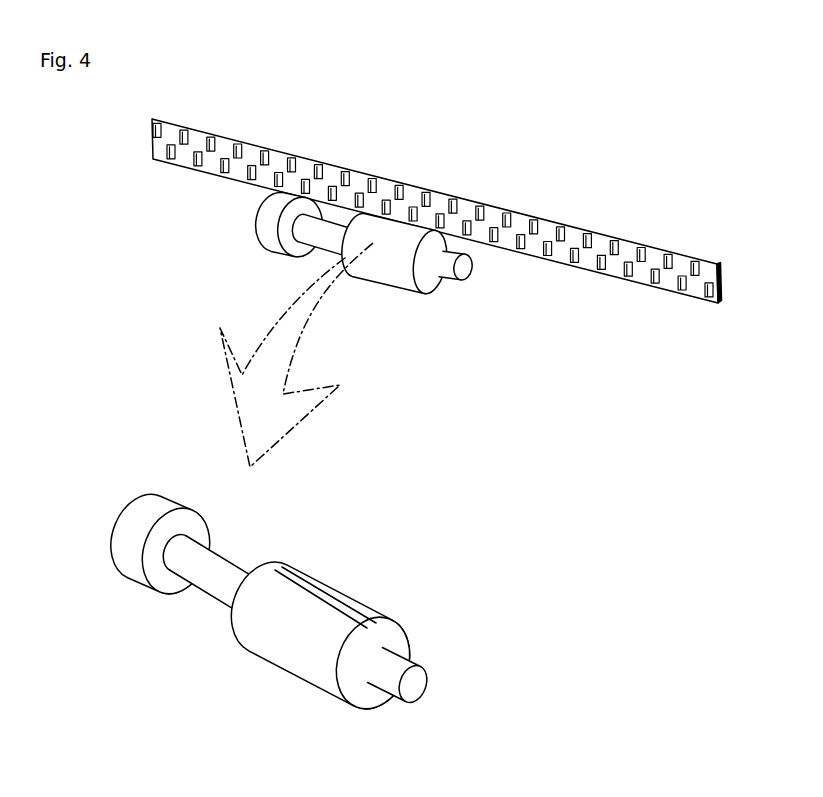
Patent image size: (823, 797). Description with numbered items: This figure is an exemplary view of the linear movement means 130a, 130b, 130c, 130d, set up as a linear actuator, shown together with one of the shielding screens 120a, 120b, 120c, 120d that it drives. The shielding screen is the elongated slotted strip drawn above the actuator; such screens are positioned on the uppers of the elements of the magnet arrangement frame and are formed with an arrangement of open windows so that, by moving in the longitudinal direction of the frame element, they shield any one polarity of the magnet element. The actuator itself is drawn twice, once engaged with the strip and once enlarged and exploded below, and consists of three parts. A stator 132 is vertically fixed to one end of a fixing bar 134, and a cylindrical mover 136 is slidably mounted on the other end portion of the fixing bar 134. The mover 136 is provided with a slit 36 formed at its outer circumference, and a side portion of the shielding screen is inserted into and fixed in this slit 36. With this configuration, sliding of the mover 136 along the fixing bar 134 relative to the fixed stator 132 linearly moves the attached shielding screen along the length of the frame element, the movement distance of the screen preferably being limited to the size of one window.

The shielding screen 120a is at (441, 211).
The shielding screen 120b is at (441, 211).
The shielding screen 120c is at (441, 211).
The shielding screen 120d is at (495, 213).
The linear movement means 130a is at (457, 280).
The linear movement means 130b is at (457, 280).
The linear movement means 130c is at (457, 280).
The linear movement means 130d is at (405, 307).
The stator 132 is at (133, 527).
The fixing bar 134 is at (210, 582).
The cylindrical mover 136 is at (308, 667).
The slit 36 is at (333, 602).